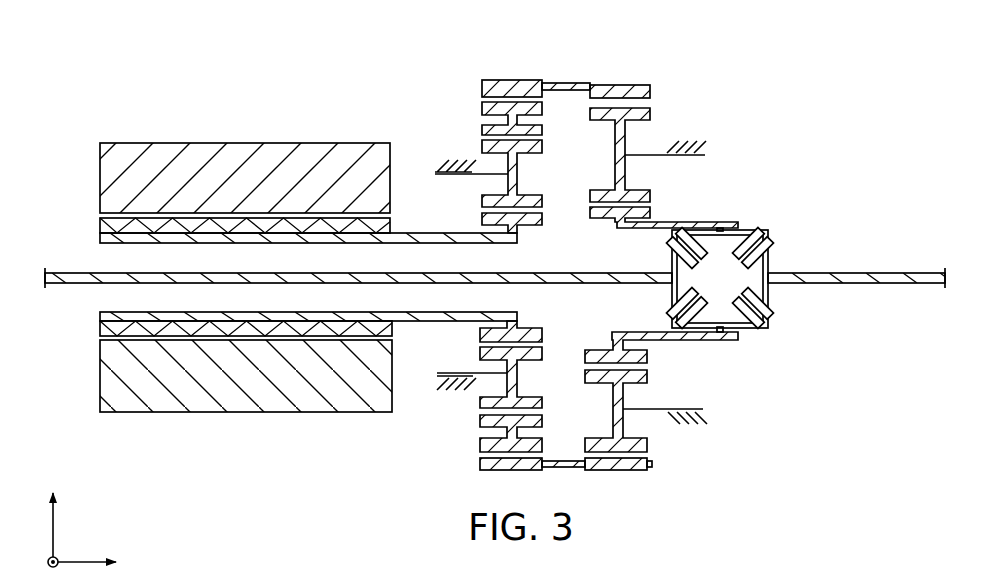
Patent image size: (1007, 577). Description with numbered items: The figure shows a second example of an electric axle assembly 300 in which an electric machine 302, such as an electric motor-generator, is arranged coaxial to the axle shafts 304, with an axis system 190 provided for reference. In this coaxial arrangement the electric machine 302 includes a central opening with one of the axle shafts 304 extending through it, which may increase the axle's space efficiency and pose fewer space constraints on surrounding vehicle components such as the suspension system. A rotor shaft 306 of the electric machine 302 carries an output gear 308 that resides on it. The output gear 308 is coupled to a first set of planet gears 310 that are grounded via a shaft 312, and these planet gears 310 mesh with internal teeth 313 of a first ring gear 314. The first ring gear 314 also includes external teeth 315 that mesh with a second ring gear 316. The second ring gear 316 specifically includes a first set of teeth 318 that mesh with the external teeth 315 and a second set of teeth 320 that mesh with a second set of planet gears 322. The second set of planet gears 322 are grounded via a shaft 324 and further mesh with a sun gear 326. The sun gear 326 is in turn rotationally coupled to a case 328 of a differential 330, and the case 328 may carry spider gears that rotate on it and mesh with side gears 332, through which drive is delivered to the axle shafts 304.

The axis system 190 is at (122, 502).
The electric axle assembly 300 is at (63, 92).
The electric machine 302 is at (67, 168).
The axle shafts 304 is at (590, 274).
The rotor shaft 306 is at (398, 233).
The output gear 308 is at (542, 224).
The first set of planet gears 310 is at (543, 203).
The shaft 312 is at (472, 177).
The internal teeth 313 is at (482, 137).
The first ring gear 314 is at (464, 108).
The external teeth 315 is at (483, 100).
The second ring gear 316 is at (571, 76).
The first set of teeth 318 is at (540, 92).
The second set of teeth 320 is at (650, 100).
The second set of planet gears 322 is at (652, 194).
The shaft 324 is at (698, 158).
The sun gear 326 is at (653, 211).
The case 328 is at (750, 322).
The differential 330 is at (786, 298).
The side gears 332 is at (772, 246).